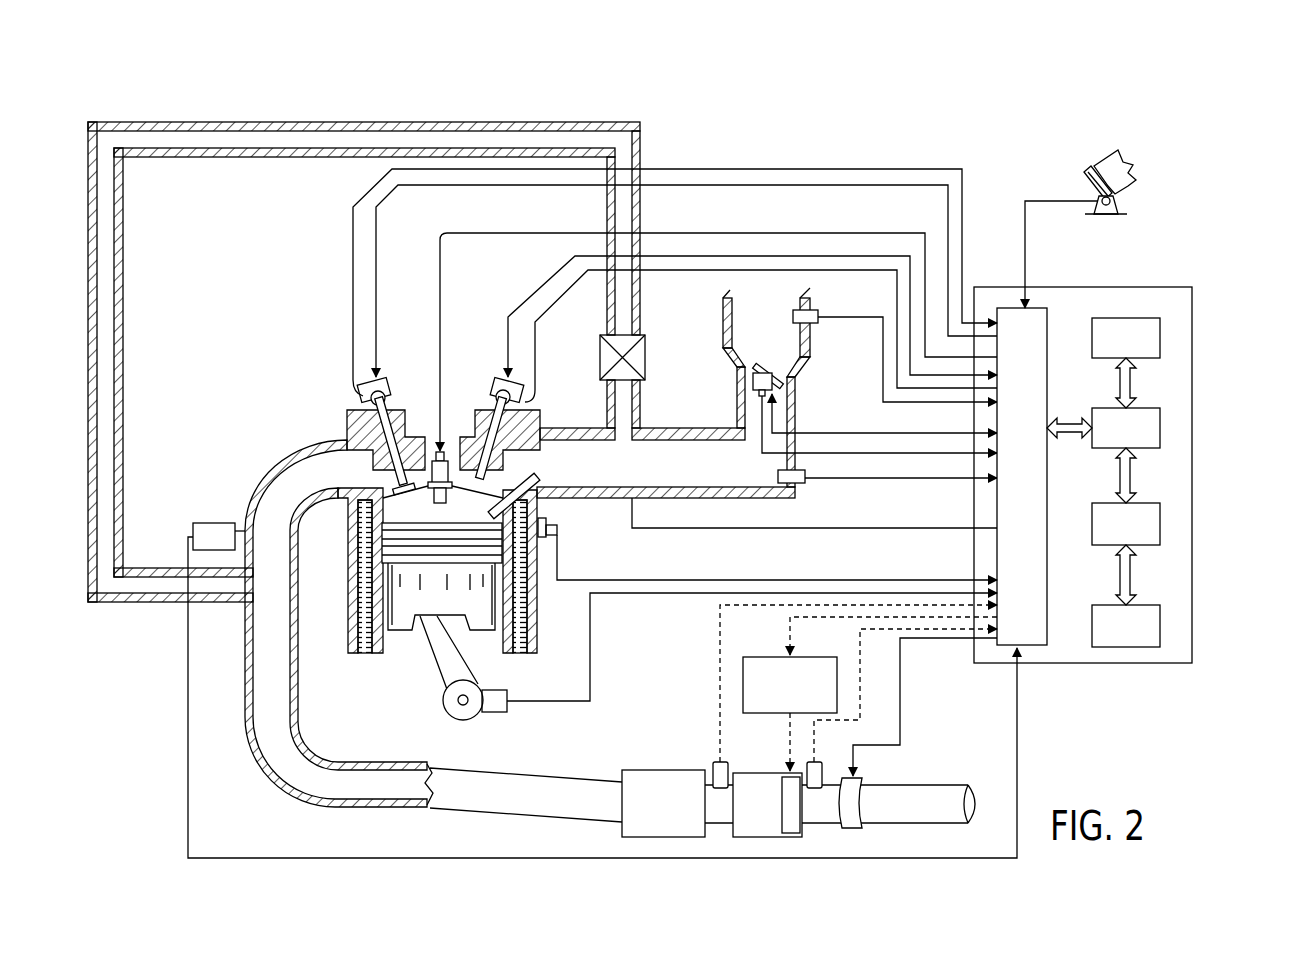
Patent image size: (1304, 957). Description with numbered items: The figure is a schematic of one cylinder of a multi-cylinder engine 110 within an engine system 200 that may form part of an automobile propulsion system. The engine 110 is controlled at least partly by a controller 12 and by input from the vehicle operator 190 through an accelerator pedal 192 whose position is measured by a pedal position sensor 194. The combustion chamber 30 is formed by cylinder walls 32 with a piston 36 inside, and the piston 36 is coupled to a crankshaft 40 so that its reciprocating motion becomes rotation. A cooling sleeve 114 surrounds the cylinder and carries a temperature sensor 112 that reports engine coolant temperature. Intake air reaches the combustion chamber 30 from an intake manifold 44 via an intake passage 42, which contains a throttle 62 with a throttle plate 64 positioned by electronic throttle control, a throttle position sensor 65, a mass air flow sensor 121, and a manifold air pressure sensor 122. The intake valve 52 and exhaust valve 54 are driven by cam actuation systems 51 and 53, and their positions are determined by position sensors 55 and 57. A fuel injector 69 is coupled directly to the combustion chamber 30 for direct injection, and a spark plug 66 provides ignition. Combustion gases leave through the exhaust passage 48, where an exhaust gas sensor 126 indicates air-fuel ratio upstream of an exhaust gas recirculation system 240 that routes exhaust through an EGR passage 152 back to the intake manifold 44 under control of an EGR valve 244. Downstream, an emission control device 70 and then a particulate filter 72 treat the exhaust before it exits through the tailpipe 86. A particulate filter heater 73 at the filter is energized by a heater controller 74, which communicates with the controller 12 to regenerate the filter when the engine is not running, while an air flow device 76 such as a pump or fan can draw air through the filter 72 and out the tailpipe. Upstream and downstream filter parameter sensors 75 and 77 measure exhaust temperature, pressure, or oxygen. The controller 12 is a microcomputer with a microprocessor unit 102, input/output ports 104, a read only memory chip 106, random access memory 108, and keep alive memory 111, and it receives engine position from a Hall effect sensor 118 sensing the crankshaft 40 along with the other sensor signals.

The controller 12 is at (1192, 287).
The combustion chamber 30 is at (366, 604).
The cylinder walls 32 is at (383, 668).
The piston 36 is at (422, 640).
The crankshaft 40 is at (447, 718).
The intake passage 42 is at (774, 344).
The intake manifold 44 is at (712, 476).
The exhaust passage 48 is at (322, 481).
The cam actuation system 51 is at (494, 382).
The intake valve 52 is at (556, 460).
The cam actuation system 53 is at (384, 382).
The exhaust valve 54 is at (367, 468).
The position sensor 55 is at (522, 401).
The position sensor 57 is at (362, 396).
The throttle 62 is at (784, 380).
The throttle plate 64 is at (753, 376).
The throttle position sensor 65 is at (759, 394).
The spark plug 66 is at (445, 450).
The fuel injector 69 is at (538, 500).
The emission control device 70 is at (674, 814).
The particulate filter 72 is at (779, 814).
The particulate filter heater 73 is at (796, 830).
The heater controller 74 is at (802, 697).
The upstream filter parameter sensor 75 is at (728, 768).
The air flow device 76 is at (864, 785).
The downstream filter parameter sensor 77 is at (820, 768).
The tailpipe 86 is at (970, 786).
The microprocessor unit 102 is at (1160, 428).
The input/output ports 104 is at (1050, 310).
The read only memory chip 106 is at (1160, 335).
The random access memory 108 is at (1160, 525).
The engine 110 is at (282, 366).
The keep alive memory 111 is at (1160, 625).
The temperature sensor 112 is at (550, 537).
The cooling sleeve 114 is at (522, 608).
The Hall effect sensor 118 is at (493, 712).
The mass air flow sensor 121 is at (815, 310).
The manifold air pressure sensor 122 is at (800, 484).
The exhaust gas sensor 126 is at (193, 526).
The EGR passage 152 is at (355, 122).
The vehicle operator 190 is at (1135, 165).
The accelerator pedal 192 is at (1085, 178).
The pedal position sensor 194 is at (1115, 200).
The engine system 200 is at (1224, 98).
The exhaust gas recirculation system 240 is at (508, 104).
The EGR valve 244 is at (645, 362).